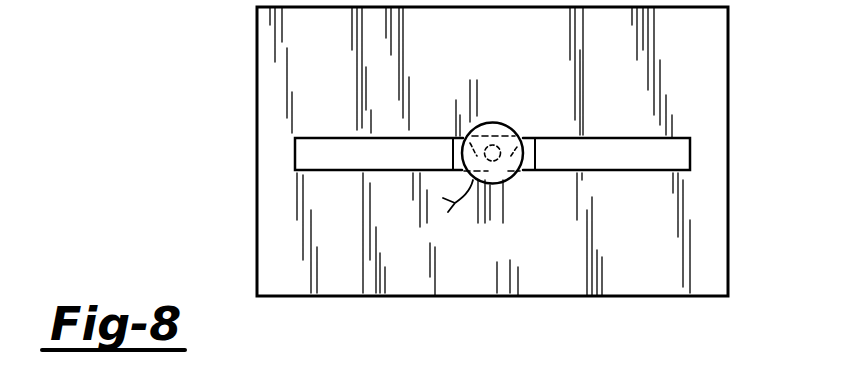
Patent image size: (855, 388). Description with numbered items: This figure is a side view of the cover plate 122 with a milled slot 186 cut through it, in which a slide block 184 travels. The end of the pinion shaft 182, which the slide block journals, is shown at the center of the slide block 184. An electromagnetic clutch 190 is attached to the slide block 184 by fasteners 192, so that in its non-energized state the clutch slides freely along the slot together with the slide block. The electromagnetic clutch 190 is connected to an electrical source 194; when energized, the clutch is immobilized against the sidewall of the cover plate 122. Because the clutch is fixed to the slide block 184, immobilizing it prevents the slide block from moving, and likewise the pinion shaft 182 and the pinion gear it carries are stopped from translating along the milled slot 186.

The cover plate 122 is at (256, 157).
The pinion shaft 182 is at (493, 161).
The slide block 184 is at (522, 176).
The milled slot 186 is at (593, 138).
The electromagnetic clutch 190 is at (505, 127).
The fasteners 192 is at (463, 132).
The electrical source 194 is at (443, 198).